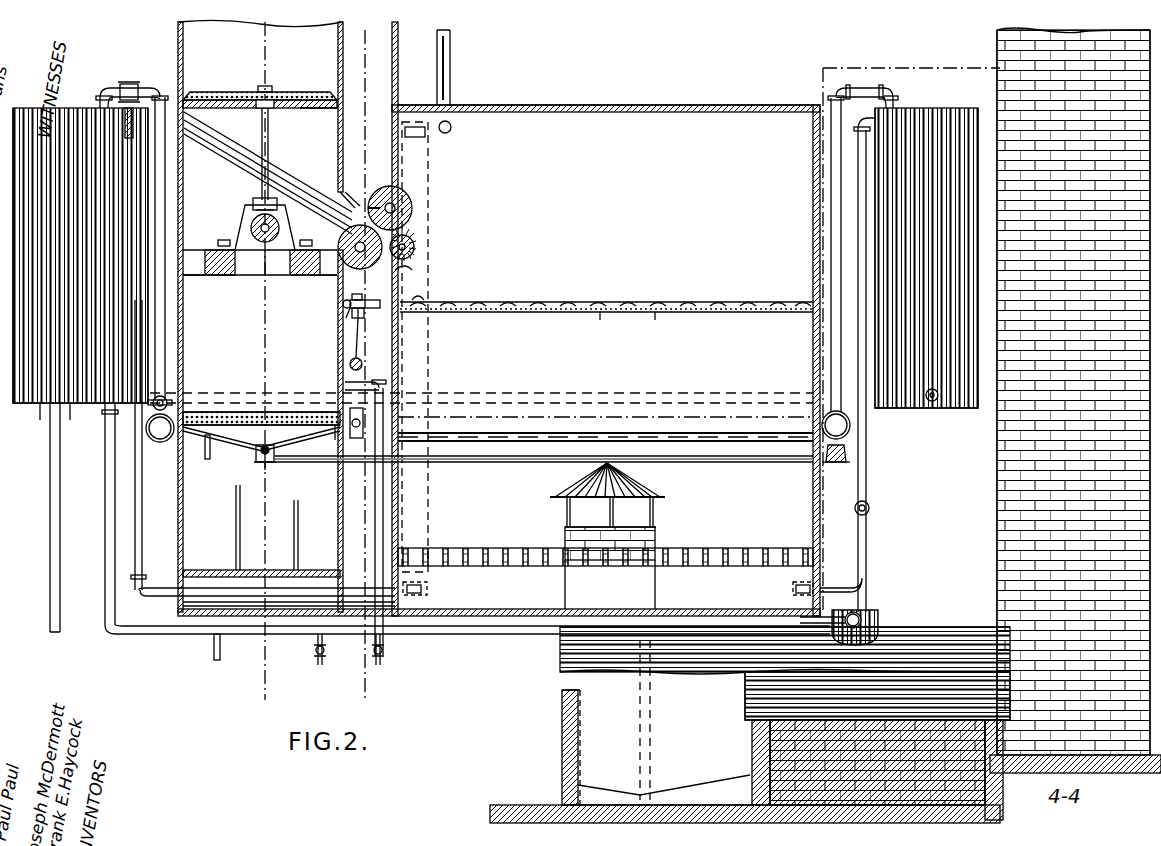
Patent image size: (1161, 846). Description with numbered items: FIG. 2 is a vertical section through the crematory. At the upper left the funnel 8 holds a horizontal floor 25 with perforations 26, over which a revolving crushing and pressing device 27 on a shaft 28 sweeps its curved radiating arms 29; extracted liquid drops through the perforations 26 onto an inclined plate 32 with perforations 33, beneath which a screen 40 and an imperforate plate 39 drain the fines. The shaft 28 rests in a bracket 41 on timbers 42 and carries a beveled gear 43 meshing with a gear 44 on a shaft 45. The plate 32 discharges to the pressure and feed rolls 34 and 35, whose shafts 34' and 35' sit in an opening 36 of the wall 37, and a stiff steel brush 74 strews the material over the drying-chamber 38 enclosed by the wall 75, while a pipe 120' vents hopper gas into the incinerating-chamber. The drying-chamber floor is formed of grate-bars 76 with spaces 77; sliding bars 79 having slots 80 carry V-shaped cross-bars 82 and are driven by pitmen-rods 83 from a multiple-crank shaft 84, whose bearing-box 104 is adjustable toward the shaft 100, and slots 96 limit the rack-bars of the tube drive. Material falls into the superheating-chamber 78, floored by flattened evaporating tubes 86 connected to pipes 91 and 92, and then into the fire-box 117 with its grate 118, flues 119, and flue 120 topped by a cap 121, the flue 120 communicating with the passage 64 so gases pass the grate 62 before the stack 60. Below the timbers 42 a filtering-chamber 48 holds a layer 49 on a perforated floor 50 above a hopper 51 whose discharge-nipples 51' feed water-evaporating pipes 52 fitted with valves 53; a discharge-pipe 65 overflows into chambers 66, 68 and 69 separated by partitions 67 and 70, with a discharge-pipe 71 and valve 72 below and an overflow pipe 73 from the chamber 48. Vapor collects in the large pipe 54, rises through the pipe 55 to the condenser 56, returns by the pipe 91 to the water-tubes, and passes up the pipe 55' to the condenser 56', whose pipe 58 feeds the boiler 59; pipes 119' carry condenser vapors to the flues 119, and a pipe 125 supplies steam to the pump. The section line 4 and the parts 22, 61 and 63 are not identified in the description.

The section line 4- 4 is at (580, 354).
The funnel 8 is at (183, 30).
The curved radiating arms 29 is at (218, 98).
The revolving crushing and pressing device 27 is at (283, 98).
The horizontal floor 25 is at (326, 109).
The perforations 26 is at (254, 108).
The shaft 28 is at (270, 148).
The screen 40 is at (222, 140).
The imperforate plate 39 is at (240, 160).
The inclined plate 32 is at (284, 188).
The perforations 33 is at (312, 200).
The bracket 41 is at (240, 222).
The beveled gear 43 is at (283, 214).
The shaft 45 is at (262, 252).
The timbers 42 is at (238, 276).
The gear 44 is at (283, 277).
The shaft of lower roll 35' is at (320, 291).
The upper pressure and feed roll 34 is at (381, 198).
The lower pressure and feed roll 35 is at (343, 242).
The shaft of upper roll 34' is at (415, 201).
The stiff steel brush 74 is at (420, 240).
The opening 36 is at (412, 270).
The drying-chamber 38 is at (499, 319).
The wall 75 is at (697, 106).
The wall 37 is at (400, 160).
The pipe 120' is at (469, 81).
The sliding bars 79 is at (524, 304).
The V-shaped cross-bars 82 is at (575, 305).
The slot 80 is at (606, 293).
The discharge-pipe 65 is at (438, 296).
The transverse grate-bars 76 is at (606, 311).
The spaces 77 is at (656, 312).
The superheating-chamber 78 is at (605, 372).
The pipe 92 is at (692, 396).
The flattened evaporating tubes 86 is at (556, 432).
The water-evaporating pipes 52 is at (312, 464).
The fire-box 117 is at (605, 505).
The cap 121 is at (553, 492).
The flue 120 is at (632, 553).
The grate 118 is at (716, 548).
The flues 119 is at (608, 584).
The pipe 55 is at (863, 248).
The condenser 56 is at (926, 241).
The pipes 119' is at (522, 365).
The pipe 91 is at (932, 402).
The large pipe 54 is at (852, 430).
The valves 53 is at (852, 460).
The stack 60 is at (998, 500).
The boiler 59 is at (880, 625).
The pit wall 61 is at (560, 722).
The grate 62 is at (660, 775).
The pit floor 63 is at (582, 790).
The passage 64 is at (640, 791).
The condenser 56' is at (80, 235).
The pipe 55' is at (161, 241).
The pipe 58 is at (106, 470).
The pipe 22 is at (50, 556).
The filtering-chamber 48 is at (261, 369).
The layer of filtering material 49 is at (225, 425).
The perforated floor 50 is at (254, 452).
The hopper 51 is at (312, 439).
The discharge-nipples 51' is at (216, 463).
The chamber 66 is at (261, 542).
The partition 67 is at (236, 545).
The chamber 68 is at (267, 527).
The partition 70 is at (298, 520).
The chamber 69 is at (318, 535).
The pipe 73 is at (376, 530).
The slots 96 is at (356, 431).
The pitmen-rods 83 is at (363, 294).
The multiple-crank shaft 84 is at (364, 312).
The bearing-box 104 is at (360, 321).
The shaft 100 is at (358, 360).
The discharge-pipe 71 is at (318, 604).
The pipe 125 is at (220, 650).
The valve 72 is at (323, 662).